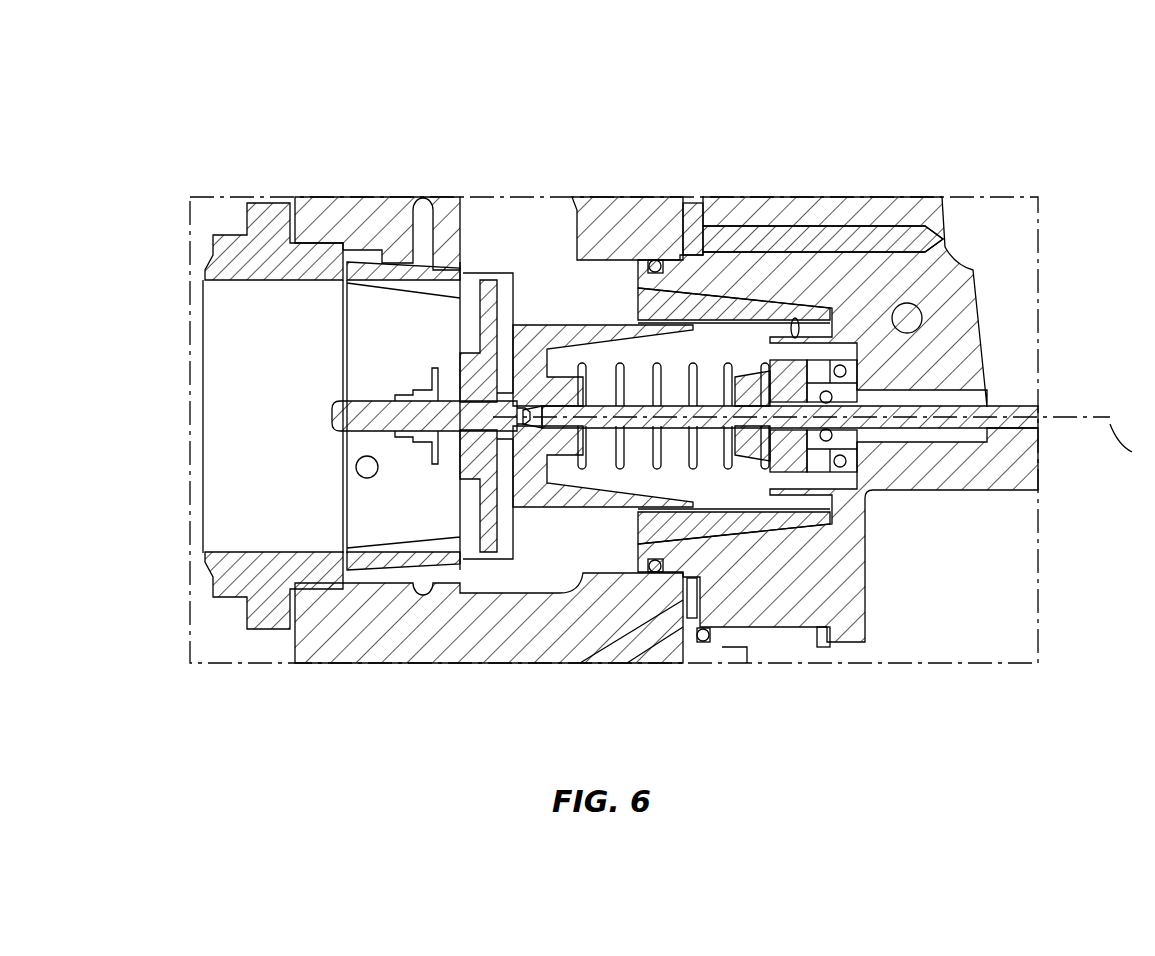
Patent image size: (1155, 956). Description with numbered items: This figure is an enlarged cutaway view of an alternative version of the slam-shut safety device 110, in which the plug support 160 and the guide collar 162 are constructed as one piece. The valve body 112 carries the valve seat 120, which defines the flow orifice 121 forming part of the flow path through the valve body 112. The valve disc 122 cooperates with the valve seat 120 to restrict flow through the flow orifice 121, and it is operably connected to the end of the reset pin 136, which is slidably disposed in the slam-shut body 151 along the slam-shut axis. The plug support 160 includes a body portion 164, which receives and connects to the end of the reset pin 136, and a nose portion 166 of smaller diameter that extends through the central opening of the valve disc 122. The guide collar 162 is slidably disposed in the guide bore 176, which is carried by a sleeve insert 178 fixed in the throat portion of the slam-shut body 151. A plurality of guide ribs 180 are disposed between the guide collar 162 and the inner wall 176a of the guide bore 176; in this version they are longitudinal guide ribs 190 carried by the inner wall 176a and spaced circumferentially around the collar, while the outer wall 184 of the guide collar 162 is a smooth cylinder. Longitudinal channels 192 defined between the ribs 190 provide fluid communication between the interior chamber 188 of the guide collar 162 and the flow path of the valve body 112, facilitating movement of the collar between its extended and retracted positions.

The slam-shut safety device 110 is at (1018, 226).
The valve body 112 is at (352, 637).
The valve seat 120 is at (393, 265).
The flow orifice 121 is at (365, 508).
The valve disc 122 is at (493, 277).
The reset pin 136 is at (1007, 410).
The slam-shut body 151 is at (860, 575).
The plug support 160 is at (452, 388).
The guide collar 162 is at (543, 314).
The body portion 164 is at (567, 380).
The nose portion 166 is at (372, 398).
The guide bore 176 is at (752, 343).
The inner wall 176a is at (800, 335).
The sleeve insert 178 is at (706, 650).
The guide ribs 180 is at (815, 235).
The longitudinal guide ribs 190 is at (823, 239).
The outer wall 184 is at (598, 326).
The interior chamber 188 is at (705, 530).
The longitudinal channels 192 is at (757, 498).